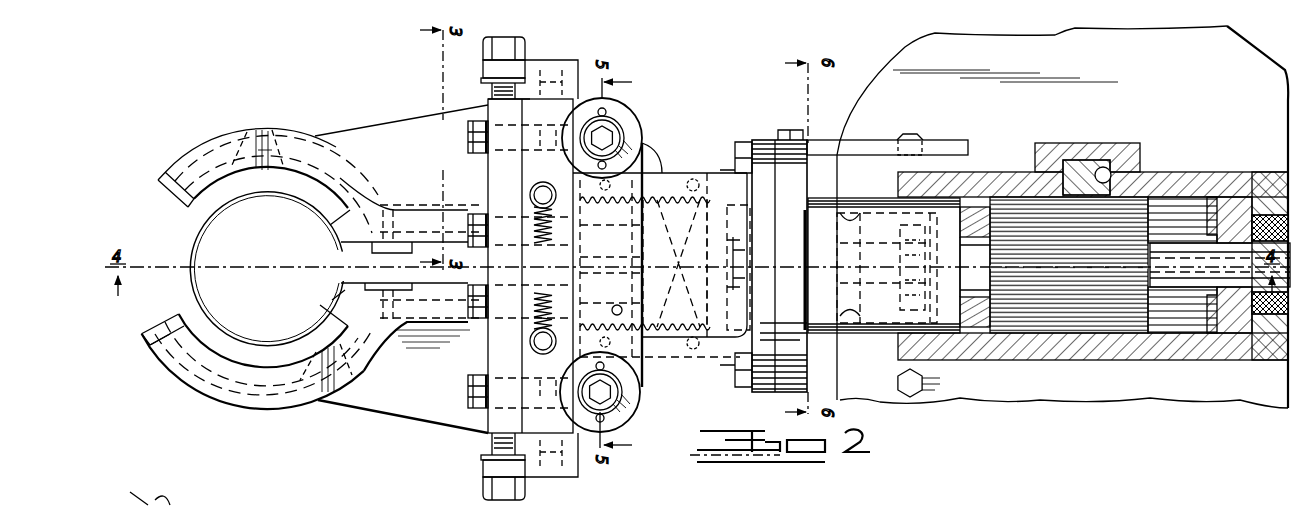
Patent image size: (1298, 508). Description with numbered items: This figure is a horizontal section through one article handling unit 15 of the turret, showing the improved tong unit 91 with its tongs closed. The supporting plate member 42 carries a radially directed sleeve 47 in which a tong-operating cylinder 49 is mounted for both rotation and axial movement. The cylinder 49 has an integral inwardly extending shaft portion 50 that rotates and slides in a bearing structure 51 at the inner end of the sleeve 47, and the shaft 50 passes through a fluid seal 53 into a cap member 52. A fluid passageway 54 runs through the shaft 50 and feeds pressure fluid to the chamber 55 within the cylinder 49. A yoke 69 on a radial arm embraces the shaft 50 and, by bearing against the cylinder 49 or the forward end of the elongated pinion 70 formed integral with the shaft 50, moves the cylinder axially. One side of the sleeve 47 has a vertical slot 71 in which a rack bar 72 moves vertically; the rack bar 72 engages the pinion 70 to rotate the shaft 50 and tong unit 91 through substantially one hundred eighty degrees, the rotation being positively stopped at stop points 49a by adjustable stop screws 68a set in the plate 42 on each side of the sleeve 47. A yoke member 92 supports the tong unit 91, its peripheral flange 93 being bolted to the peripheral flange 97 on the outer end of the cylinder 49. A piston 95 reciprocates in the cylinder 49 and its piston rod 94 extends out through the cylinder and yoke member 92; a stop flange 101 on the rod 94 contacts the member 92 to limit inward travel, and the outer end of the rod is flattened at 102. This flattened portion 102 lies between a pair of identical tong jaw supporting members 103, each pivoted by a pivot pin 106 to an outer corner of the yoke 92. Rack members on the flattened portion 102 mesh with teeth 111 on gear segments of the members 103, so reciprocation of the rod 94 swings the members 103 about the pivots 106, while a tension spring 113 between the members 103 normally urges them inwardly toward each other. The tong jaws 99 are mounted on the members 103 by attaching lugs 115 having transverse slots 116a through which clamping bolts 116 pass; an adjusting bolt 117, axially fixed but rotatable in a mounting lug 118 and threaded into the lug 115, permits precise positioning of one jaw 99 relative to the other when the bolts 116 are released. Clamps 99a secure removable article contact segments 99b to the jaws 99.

The article handling unit 15 is at (350, 88).
The supporting plate member 42 is at (1240, 400).
The sleeve 47 is at (968, 175).
The tong-operating cylinder 49 is at (848, 338).
The stop points 49a is at (968, 142).
The shaft portion 50 is at (1182, 258).
The bearing structure 51 is at (1232, 300).
The cap member 52 is at (1270, 170).
The fluid seal 53 is at (1258, 215).
The fluid passageway 54 is at (1190, 290).
The chamber 55 is at (858, 215).
The adjustable stop screws 68a is at (912, 133).
The yoke 69 is at (975, 322).
The pinion 70 is at (1092, 330).
The vertical slot 71 is at (1110, 165).
The rack bar 72 is at (1072, 160).
The tong unit 91 is at (412, 423).
The yoke member 92 is at (650, 352).
The peripheral flange 93 is at (762, 393).
The piston rod 94 is at (845, 297).
The piston 95 is at (886, 235).
The peripheral flange 97 is at (782, 150).
The tong jaws 99 is at (240, 128).
The clamps 99a is at (402, 258).
The article contact segments 99b is at (192, 312).
The stop flange 101 is at (725, 178).
The flattened portion 102 is at (700, 175).
The tong jaw supporting members 103 is at (537, 162).
The pivot pin 106 is at (617, 135).
The teeth 111 is at (675, 265).
The tension spring 113 is at (556, 236).
The attaching lugs 115 is at (488, 108).
The clamping bolts 116 is at (470, 128).
The slots 116a is at (484, 152).
The adjusting bolt 117 is at (524, 40).
The mounting lug 118 is at (570, 62).